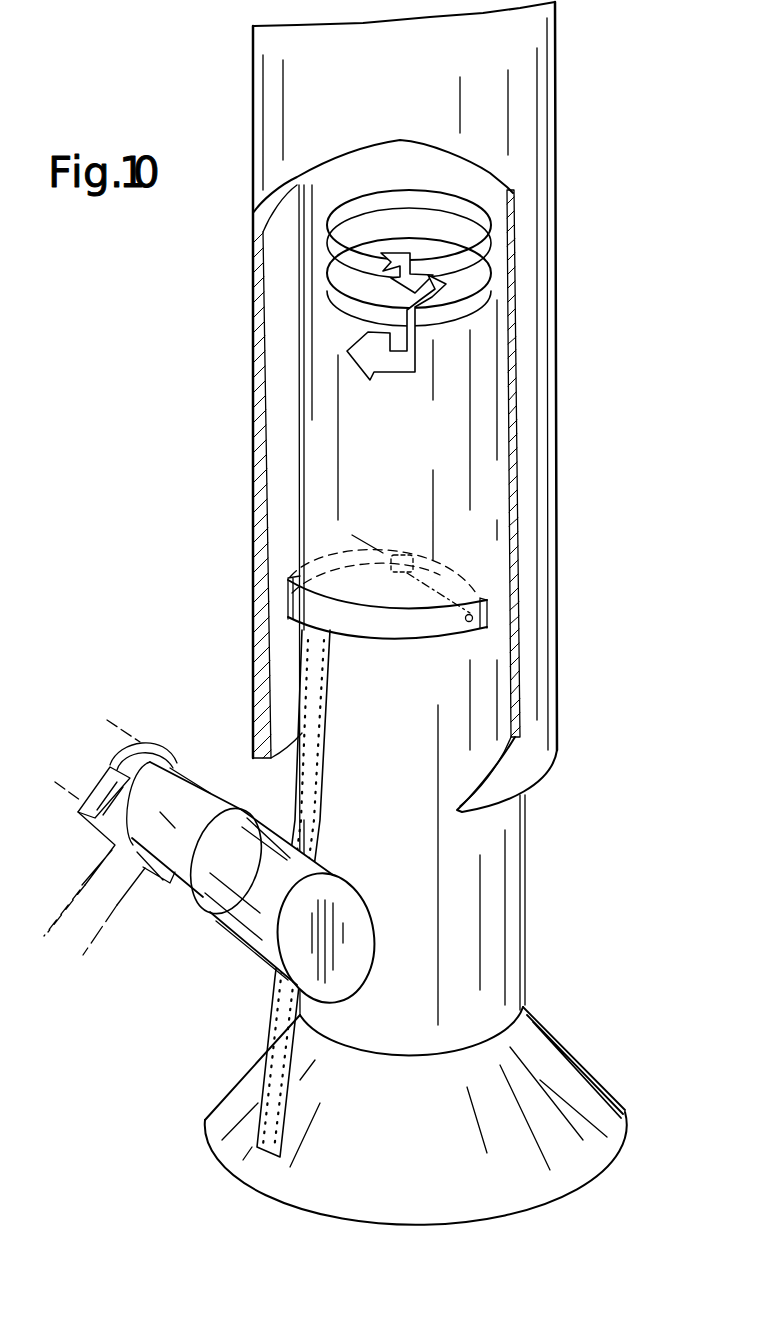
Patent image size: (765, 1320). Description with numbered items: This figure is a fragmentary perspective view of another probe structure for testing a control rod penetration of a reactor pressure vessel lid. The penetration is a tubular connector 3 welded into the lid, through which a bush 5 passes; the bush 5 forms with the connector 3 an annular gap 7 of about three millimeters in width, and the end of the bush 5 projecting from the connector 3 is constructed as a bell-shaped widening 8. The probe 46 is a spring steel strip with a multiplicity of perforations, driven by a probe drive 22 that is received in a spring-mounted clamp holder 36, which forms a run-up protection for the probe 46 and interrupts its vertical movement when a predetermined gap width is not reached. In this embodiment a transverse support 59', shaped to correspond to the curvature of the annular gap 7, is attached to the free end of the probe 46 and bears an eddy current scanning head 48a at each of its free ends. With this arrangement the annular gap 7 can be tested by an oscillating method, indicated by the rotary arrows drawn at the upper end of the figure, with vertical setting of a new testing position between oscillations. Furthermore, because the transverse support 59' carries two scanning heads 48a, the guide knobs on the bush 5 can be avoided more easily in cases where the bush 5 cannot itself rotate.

The tubular connector 3 is at (545, 388).
The bush 5 is at (502, 945).
The annular gap 7 is at (283, 302).
The bell-shaped widening 8 is at (570, 1083).
The probe drive 22 is at (353, 938).
The clamp holder 36 is at (103, 800).
The probe 46 is at (327, 733).
The eddy current scanning head 48a is at (407, 557).
The transverse support 59' is at (387, 622).